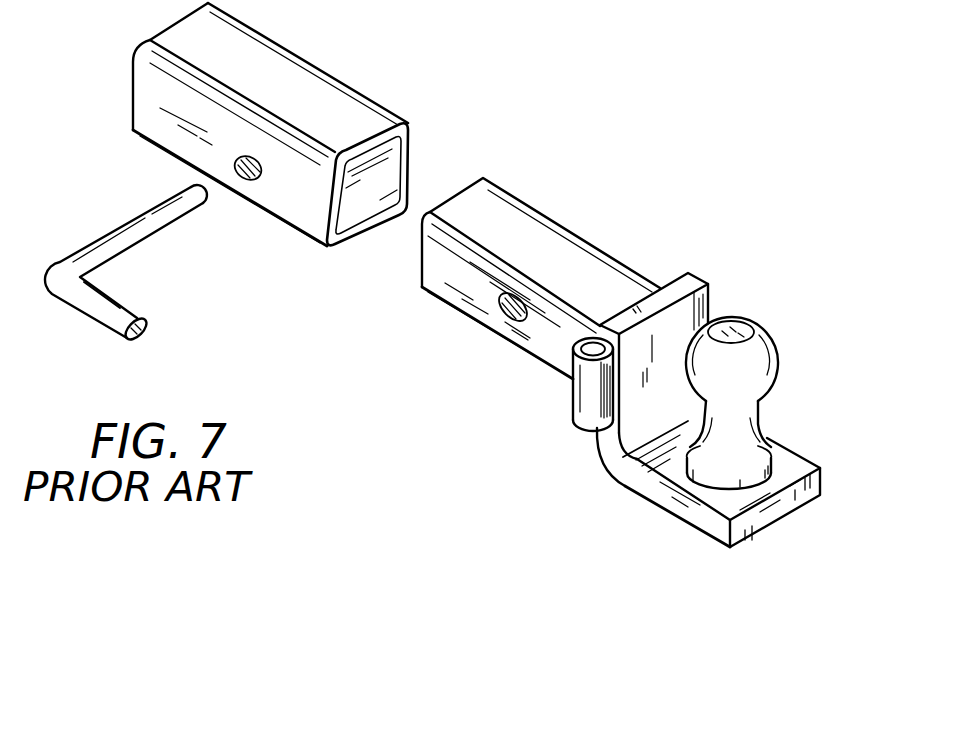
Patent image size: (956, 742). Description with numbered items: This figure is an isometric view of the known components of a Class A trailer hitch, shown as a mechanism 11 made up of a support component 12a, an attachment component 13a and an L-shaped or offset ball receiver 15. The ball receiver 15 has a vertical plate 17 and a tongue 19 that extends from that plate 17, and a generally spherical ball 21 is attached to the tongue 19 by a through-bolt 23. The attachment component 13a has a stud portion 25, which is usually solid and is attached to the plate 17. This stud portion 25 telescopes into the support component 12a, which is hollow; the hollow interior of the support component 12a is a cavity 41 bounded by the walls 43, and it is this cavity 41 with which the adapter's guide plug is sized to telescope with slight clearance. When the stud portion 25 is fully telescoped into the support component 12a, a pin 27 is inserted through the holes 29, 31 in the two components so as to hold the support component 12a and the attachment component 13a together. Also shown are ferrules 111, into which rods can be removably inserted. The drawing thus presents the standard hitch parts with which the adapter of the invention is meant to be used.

The mechanism 11 is at (525, 112).
The support component 12a is at (319, 161).
The attachment component 13a is at (668, 219).
The ball receiver 15 is at (686, 409).
The vertical plate 17 is at (703, 305).
The tongue 19 is at (763, 513).
The ball 21 is at (760, 385).
The through-bolt 23 is at (743, 320).
The stud portion 25 is at (535, 262).
The pin 27 is at (139, 228).
The hole 29 is at (245, 180).
The hole 31 is at (505, 318).
The cavity 41 is at (350, 208).
The walls 43 is at (347, 117).
The ferrules 111 is at (583, 398).